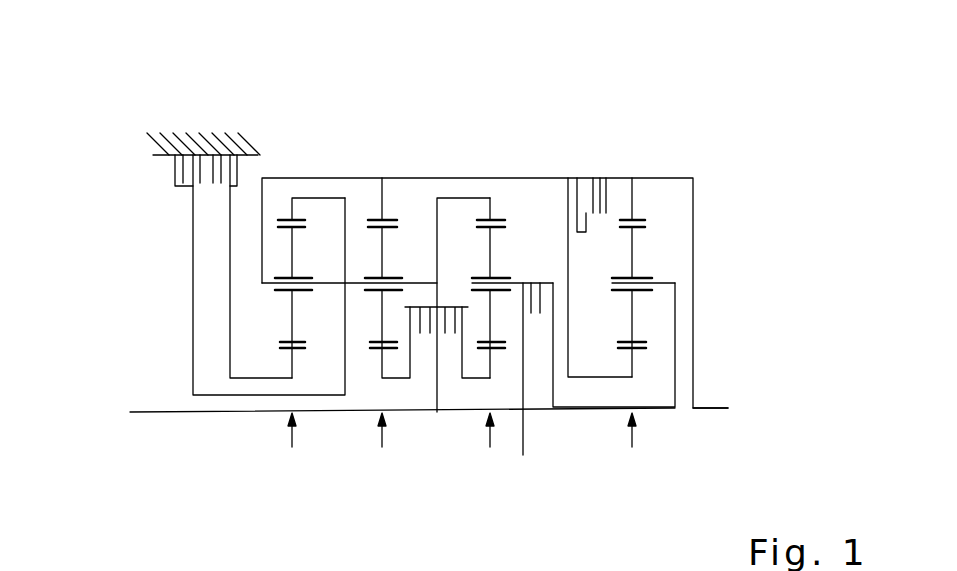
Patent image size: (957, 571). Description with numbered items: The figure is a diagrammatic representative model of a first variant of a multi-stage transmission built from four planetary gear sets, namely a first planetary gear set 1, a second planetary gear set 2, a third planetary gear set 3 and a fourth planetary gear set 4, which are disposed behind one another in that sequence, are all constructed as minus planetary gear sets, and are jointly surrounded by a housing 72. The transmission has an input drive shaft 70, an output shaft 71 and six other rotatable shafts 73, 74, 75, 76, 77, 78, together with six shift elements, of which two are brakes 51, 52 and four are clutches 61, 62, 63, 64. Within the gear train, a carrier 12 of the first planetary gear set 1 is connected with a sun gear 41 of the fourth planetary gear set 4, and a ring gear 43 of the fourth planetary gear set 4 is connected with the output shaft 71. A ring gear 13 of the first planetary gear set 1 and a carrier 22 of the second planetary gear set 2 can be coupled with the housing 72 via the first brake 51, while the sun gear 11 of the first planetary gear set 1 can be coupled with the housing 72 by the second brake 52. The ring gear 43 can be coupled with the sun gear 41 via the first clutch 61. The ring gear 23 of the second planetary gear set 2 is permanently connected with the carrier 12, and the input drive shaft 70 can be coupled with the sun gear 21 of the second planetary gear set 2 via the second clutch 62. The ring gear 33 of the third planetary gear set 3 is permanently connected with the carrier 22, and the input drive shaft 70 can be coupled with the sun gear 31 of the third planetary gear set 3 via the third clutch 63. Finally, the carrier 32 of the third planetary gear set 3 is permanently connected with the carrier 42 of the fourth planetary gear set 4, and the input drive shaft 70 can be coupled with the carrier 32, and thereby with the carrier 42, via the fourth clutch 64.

The first planetary gear set 1 is at (292, 450).
The second planetary gear set 2 is at (383, 450).
The third planetary gear set 3 is at (492, 450).
The fourth planetary gear set 4 is at (632, 450).
The sun gear of the first planetary gear set 11 is at (287, 352).
The carrier of the first planetary gear set 12 is at (270, 288).
The ring gear of the first planetary gear set 13 is at (282, 218).
The sun gear of the second planetary gear set 21 is at (390, 350).
The carrier of the second planetary gear set 22 is at (360, 285).
The ring gear of the second planetary gear set 23 is at (383, 218).
The sun gear of the third planetary gear set 31 is at (494, 378).
The carrier of the third planetary gear set 32 is at (515, 280).
The ring gear of the third planetary gear set 33 is at (492, 218).
The sun gear of the fourth planetary gear set 41 is at (637, 350).
The carrier of the fourth planetary gear set 42 is at (662, 277).
The ring gear of the fourth planetary gear set 43 is at (640, 218).
The first brake 51 is at (172, 177).
The second brake 52 is at (237, 177).
The first clutch 61 is at (603, 205).
The second clutch 62 is at (415, 347).
The third clutch 63 is at (448, 305).
The fourth clutch 64 is at (531, 313).
The input drive shaft 70 is at (150, 414).
The output shaft 71 is at (710, 410).
The housing 72 is at (224, 152).
The rotatable shaft 73 is at (190, 268).
The rotatable shaft 74 is at (230, 347).
The rotatable shaft 75 is at (412, 177).
The rotatable shaft 76 is at (578, 410).
The rotatable shaft 77 is at (383, 380).
The rotatable shaft 78 is at (493, 368).